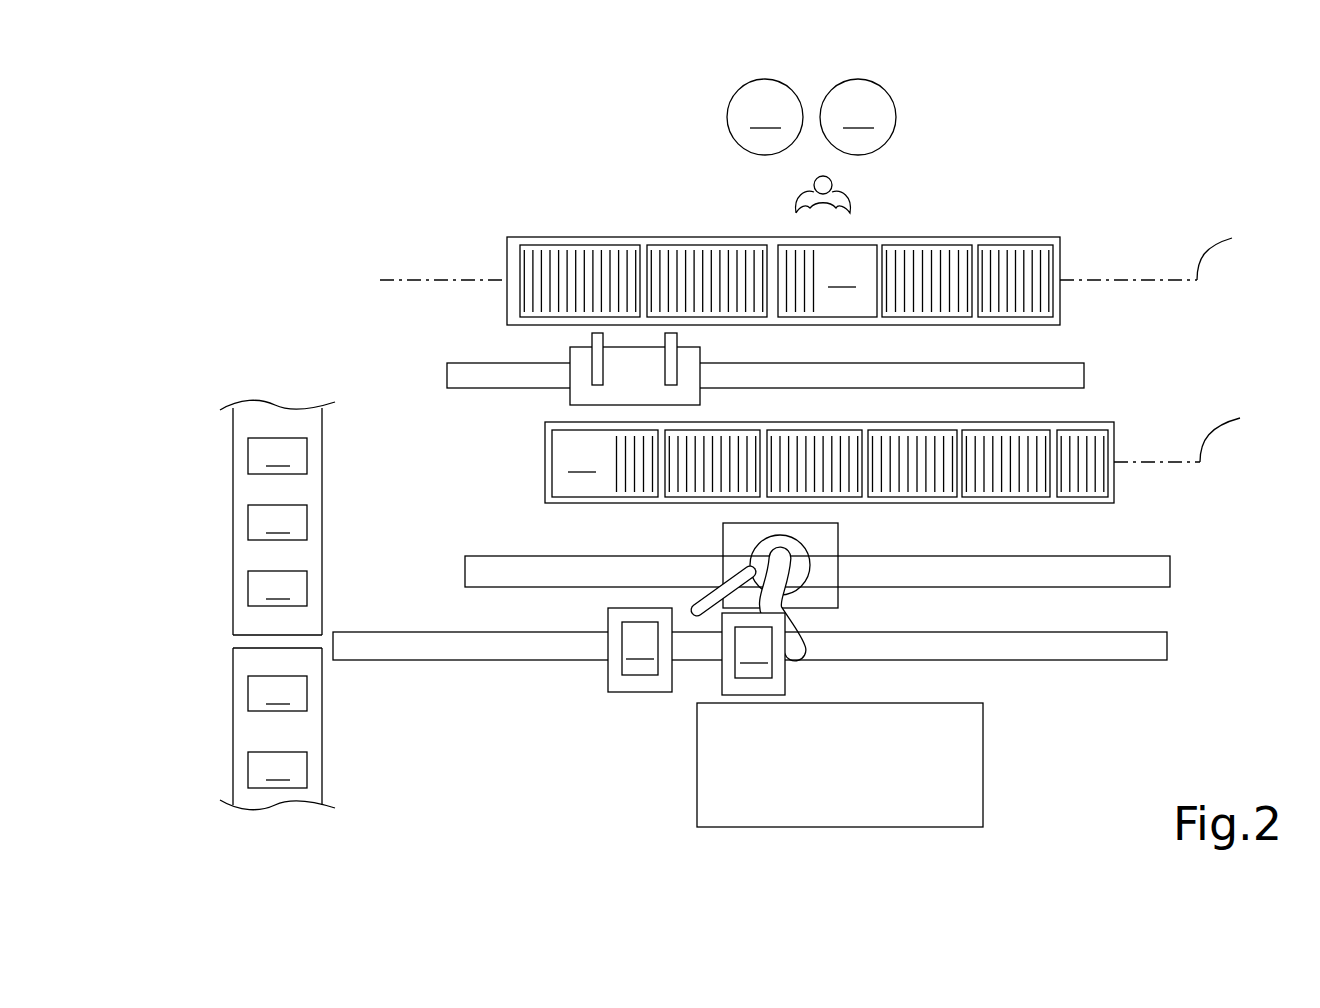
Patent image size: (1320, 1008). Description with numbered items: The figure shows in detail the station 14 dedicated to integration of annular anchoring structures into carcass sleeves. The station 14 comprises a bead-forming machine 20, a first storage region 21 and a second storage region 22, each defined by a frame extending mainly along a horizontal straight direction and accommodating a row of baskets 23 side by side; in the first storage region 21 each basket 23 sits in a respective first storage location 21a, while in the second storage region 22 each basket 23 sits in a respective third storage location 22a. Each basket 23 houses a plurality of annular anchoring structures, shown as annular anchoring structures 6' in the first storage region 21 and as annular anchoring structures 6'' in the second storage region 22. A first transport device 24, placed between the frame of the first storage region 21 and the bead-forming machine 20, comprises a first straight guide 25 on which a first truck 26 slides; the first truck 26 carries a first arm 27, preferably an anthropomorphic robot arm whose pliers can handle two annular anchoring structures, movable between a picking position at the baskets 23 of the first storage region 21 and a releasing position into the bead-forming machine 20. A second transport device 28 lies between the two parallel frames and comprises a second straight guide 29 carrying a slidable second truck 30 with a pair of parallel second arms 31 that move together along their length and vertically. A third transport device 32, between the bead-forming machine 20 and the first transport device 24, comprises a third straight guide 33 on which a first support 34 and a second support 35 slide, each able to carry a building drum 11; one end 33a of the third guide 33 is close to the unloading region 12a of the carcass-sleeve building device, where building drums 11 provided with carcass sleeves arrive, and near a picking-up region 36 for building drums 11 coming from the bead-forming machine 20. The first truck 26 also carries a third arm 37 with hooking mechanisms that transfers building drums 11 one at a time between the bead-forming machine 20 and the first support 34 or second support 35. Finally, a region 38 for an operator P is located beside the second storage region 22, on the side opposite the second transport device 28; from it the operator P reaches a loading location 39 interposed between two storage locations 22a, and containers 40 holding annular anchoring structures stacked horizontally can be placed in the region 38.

The station 14 is at (322, 210).
The second storage region 22 is at (1072, 233).
The third storage locations 22a is at (514, 252).
The annular anchoring structures 6'' is at (786, 220).
The baskets 23 is at (617, 237).
The containers 40 is at (811, 117).
The region for an operator 38 is at (847, 170).
The operator P is at (851, 196).
The second transport device 28 is at (467, 355).
The second straight guide 29 is at (1085, 370).
The second truck 30 is at (580, 393).
The second arms 31 is at (590, 337).
The loading location 39 is at (840, 320).
The first storage region 21 is at (1123, 427).
The first storage locations 21a is at (820, 427).
The annular anchoring structures 6' is at (860, 464).
The first straight guide 25 is at (1172, 568).
The first transport device 24 is at (853, 600).
The first truck 26 is at (832, 539).
The third arm 37 is at (697, 603).
The first arm 27 is at (786, 617).
The third straight guide 33 is at (761, 642).
The end of third guide 33a is at (350, 641).
The third transport device 32 is at (558, 681).
The first support 34 is at (615, 687).
The second support 35 is at (728, 684).
The bead-forming machine 20 is at (985, 748).
The unloading region 12a is at (237, 557).
The picking-up region 36 is at (247, 650).
The building drum 11 is at (277, 613).